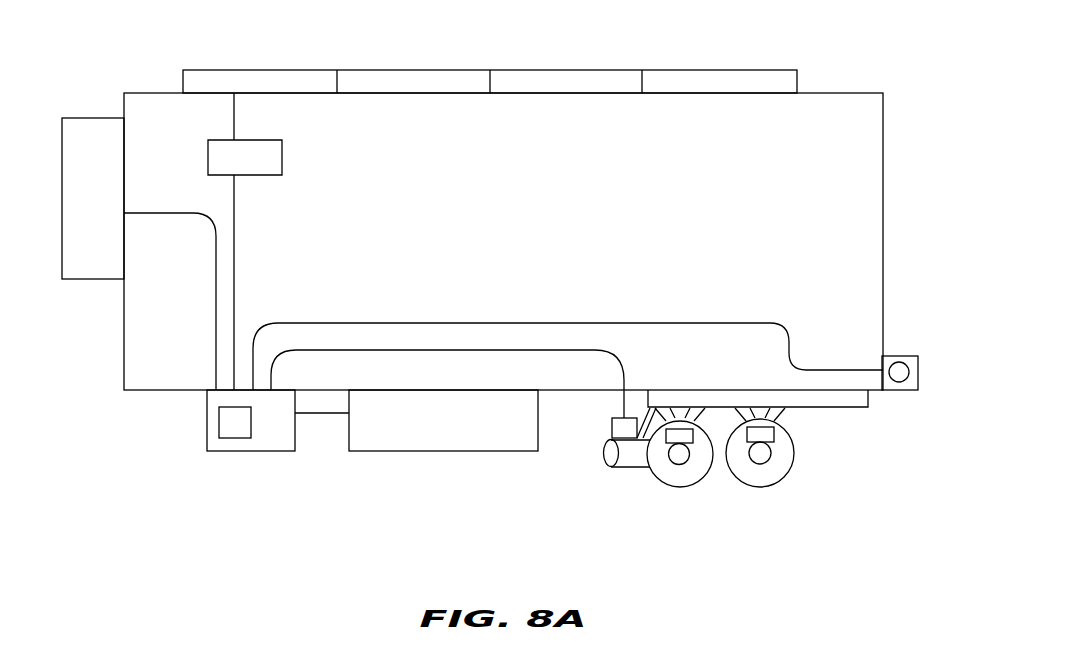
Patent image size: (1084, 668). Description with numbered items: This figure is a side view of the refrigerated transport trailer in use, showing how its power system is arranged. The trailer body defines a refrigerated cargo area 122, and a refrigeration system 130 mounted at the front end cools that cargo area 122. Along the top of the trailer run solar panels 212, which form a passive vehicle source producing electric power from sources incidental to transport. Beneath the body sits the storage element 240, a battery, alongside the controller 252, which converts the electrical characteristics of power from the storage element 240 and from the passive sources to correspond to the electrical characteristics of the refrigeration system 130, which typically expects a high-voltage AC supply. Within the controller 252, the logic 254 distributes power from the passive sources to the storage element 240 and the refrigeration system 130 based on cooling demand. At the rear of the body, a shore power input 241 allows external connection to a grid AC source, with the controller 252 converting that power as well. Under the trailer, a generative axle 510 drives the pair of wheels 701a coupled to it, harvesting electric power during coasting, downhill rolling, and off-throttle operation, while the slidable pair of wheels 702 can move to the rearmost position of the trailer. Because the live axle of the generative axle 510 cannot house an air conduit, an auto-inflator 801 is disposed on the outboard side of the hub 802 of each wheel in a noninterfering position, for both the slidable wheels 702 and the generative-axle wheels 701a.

The cargo area 122 is at (665, 170).
The refrigeration system 130 is at (72, 193).
The solar panels 212 is at (797, 70).
The shore power input 241 is at (896, 356).
The controller 252 is at (270, 452).
The logic 254 is at (233, 423).
The storage element 240 is at (393, 452).
The generative axle 510 is at (594, 464).
The pair of wheels coupled to the generative axle 701a is at (650, 477).
The slidable pair of wheels 702 is at (737, 487).
The auto-inflator 801 is at (772, 433).
The hub 802 is at (763, 455).